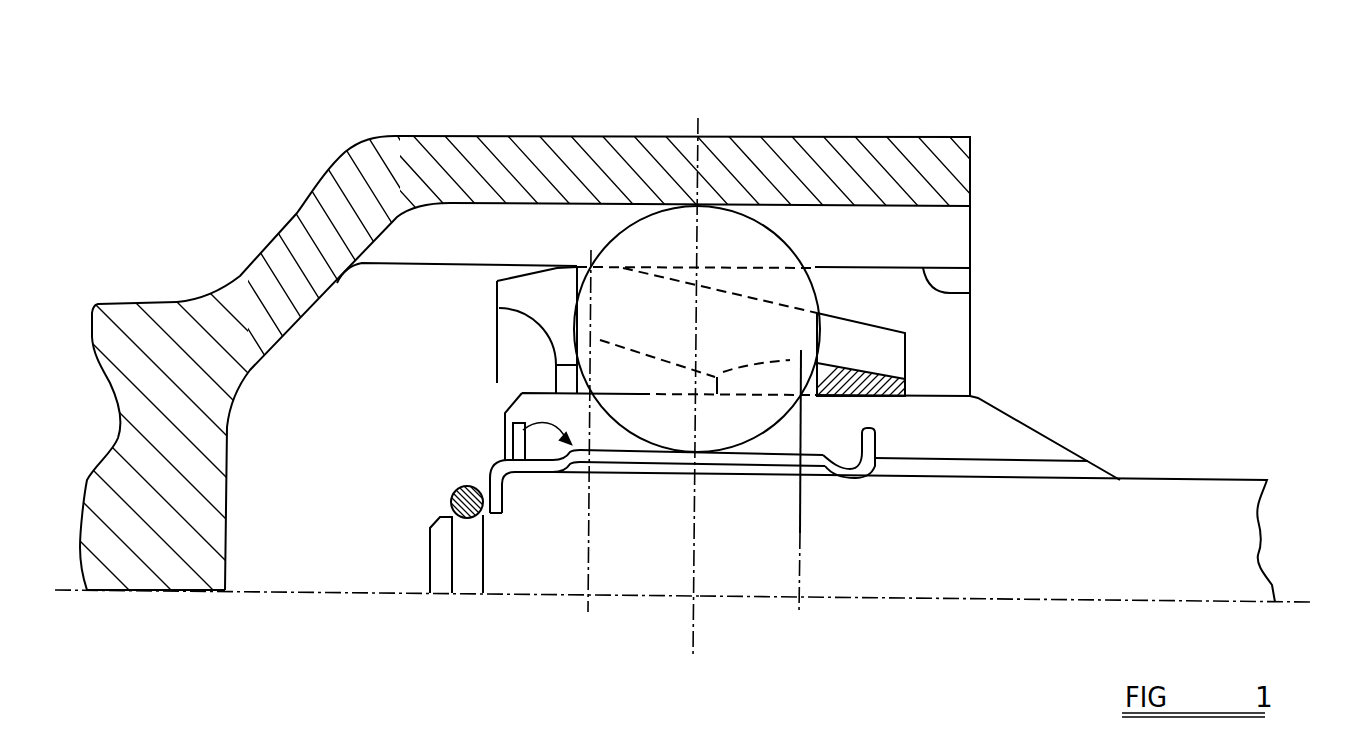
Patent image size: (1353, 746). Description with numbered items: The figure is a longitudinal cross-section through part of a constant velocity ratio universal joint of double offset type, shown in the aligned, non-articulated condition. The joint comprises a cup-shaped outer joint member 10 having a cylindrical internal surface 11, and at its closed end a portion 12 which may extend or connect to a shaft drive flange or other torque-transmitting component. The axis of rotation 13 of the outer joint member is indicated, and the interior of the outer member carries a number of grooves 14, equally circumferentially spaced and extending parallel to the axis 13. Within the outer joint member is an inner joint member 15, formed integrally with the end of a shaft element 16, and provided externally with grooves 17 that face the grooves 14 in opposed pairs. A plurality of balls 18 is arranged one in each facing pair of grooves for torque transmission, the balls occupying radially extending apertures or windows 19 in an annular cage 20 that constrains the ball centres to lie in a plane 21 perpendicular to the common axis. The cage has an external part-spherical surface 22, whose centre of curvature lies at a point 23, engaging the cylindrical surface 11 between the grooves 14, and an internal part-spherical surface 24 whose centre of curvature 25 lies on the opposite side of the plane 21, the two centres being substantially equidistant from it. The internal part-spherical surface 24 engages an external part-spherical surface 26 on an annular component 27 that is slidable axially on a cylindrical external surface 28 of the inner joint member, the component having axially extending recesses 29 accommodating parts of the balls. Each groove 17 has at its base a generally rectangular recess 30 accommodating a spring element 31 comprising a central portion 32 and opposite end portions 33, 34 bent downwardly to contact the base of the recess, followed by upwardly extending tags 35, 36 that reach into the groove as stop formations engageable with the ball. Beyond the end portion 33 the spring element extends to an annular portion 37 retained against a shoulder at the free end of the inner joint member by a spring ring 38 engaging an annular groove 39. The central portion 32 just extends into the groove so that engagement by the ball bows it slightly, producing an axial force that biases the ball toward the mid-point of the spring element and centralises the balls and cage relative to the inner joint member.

The outer joint member 10 is at (922, 165).
The cylindrical internal surface 11 is at (957, 291).
The portion 12 is at (130, 377).
The axis of rotation 13 is at (140, 590).
The grooves 14 is at (953, 240).
The inner joint member 15 is at (868, 587).
The shaft element 16 is at (1237, 567).
The grooves 17 is at (933, 437).
The balls 18 is at (742, 244).
The apertures or windows 19 is at (596, 280).
The cage 20 is at (507, 295).
The plane 21 is at (700, 633).
The external part-spherical surface 22 is at (517, 270).
The point 23 is at (588, 593).
The internal part-spherical surface 24 is at (800, 423).
The centre of curvature 25 is at (798, 600).
The external part-spherical surface 26 is at (848, 367).
The annular component 27 is at (880, 375).
The cylindrical external surface 28 is at (543, 393).
The axially extending recesses 29 is at (760, 384).
The recess 30 is at (1073, 475).
The spring element 31 is at (505, 446).
The central portion 32 is at (640, 470).
The end portion 33 is at (541, 474).
The end portion 34 is at (848, 478).
The tag 35 is at (512, 428).
The tag 36 is at (880, 442).
The annular portion 37 is at (496, 517).
The spring ring 38 is at (450, 497).
The annular groove 39 is at (458, 538).